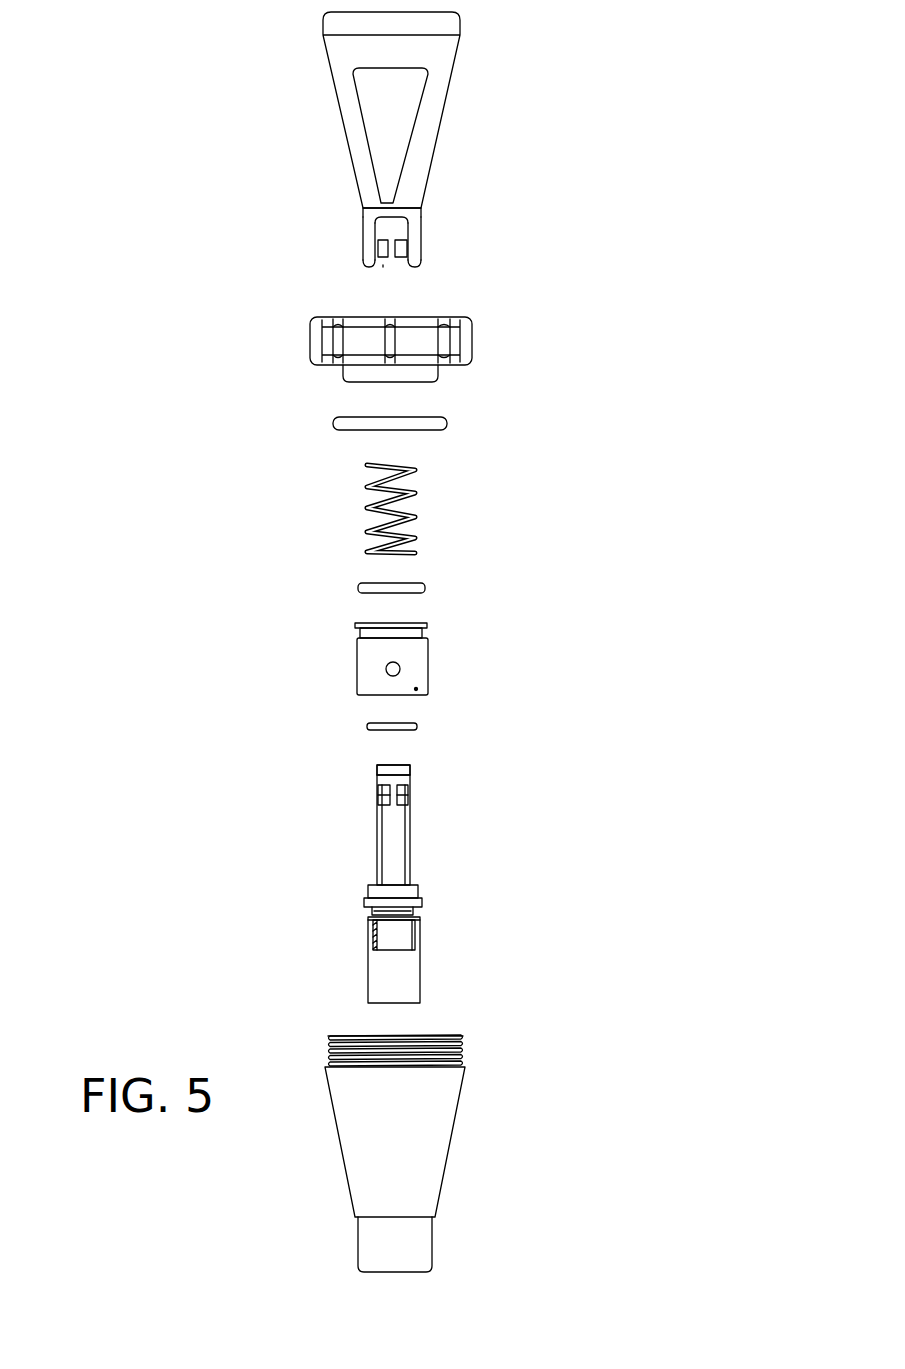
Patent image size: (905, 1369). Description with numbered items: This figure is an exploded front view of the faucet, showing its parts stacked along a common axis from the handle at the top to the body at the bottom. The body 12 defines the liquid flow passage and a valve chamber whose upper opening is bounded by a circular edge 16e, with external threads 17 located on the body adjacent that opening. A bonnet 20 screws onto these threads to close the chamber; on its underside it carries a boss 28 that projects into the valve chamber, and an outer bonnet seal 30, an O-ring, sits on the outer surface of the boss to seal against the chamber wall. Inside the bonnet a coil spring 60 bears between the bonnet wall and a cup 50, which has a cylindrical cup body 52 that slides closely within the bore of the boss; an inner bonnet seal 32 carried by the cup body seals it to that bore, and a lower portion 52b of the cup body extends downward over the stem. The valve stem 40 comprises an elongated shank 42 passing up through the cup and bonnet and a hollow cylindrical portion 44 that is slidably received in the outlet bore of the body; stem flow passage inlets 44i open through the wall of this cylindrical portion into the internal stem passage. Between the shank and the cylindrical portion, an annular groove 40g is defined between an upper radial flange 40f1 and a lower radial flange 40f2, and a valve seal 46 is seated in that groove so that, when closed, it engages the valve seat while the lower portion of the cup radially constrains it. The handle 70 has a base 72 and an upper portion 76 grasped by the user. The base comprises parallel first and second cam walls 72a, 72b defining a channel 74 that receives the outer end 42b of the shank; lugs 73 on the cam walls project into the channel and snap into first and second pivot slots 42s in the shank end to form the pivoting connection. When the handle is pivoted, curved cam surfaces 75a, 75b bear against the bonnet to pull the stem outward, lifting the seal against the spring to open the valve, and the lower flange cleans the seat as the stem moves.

The body 12 is at (353, 1127).
The circular edge 16e is at (448, 1035).
The external threads 17 is at (460, 1053).
The bonnet 20 is at (472, 340).
The boss 28 is at (440, 370).
The outer bonnet seal 30 is at (447, 423).
The inner bonnet seal 32 is at (423, 587).
The valve stem 40 is at (404, 892).
The upper radial flange 40f1 is at (367, 902).
The lower radial flange 40f2 is at (372, 912).
The annular groove 40g is at (413, 912).
The shank 42 is at (412, 830).
The outer end 42b is at (380, 767).
The pivot slots 42s is at (378, 792).
The hollow cylindrical portion 44 is at (410, 978).
The stem flow passage inlets 44i is at (382, 943).
The valve seal 46 is at (418, 727).
The cup 50 is at (424, 658).
The cup body 52 is at (363, 670).
The lower portion 52b is at (430, 695).
The coil spring 60 is at (413, 520).
The handle 70 is at (446, 140).
The base 72 is at (430, 216).
The first cam wall 72a is at (363, 232).
The second cam wall 72b is at (420, 232).
The lugs 73 is at (383, 240).
The channel 74 is at (378, 275).
The first curved cam surface 75a is at (365, 263).
The second curved cam surface 75b is at (418, 263).
The upper portion 76 is at (438, 87).